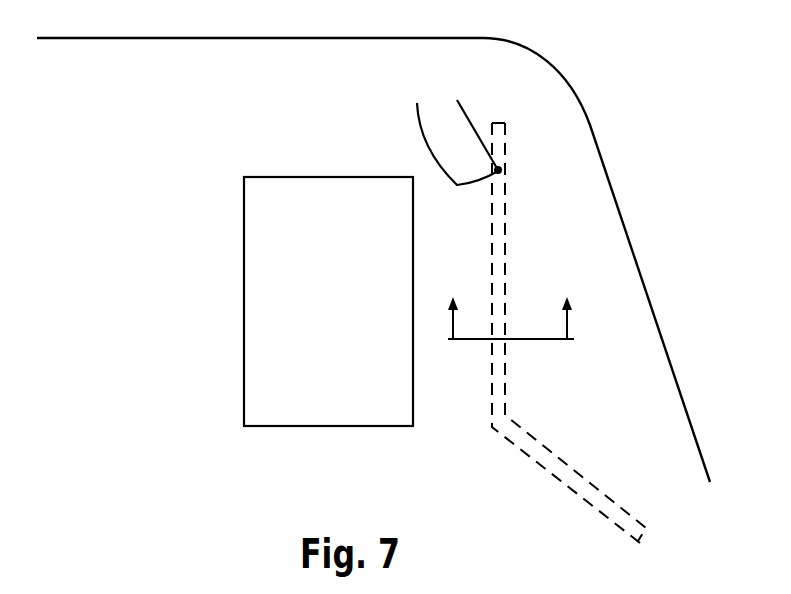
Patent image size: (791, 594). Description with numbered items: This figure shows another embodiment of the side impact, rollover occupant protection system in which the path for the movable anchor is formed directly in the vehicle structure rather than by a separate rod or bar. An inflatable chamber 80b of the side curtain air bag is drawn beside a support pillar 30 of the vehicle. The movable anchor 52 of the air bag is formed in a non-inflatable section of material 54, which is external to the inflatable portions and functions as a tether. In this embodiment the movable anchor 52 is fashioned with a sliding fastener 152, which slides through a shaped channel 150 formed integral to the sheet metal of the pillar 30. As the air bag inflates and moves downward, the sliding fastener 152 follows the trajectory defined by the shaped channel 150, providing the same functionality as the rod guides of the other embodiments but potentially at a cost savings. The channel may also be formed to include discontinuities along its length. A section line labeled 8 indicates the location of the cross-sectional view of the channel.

The inflatable chamber 80b is at (328, 301).
The shaped channel 150 is at (497, 282).
The support pillar 30 is at (461, 409).
The non-inflatable section of material 54 is at (465, 175).
The sliding fastener 152 is at (501, 169).
The movable anchor 52 is at (460, 131).
The section line 8- 8 is at (516, 303).